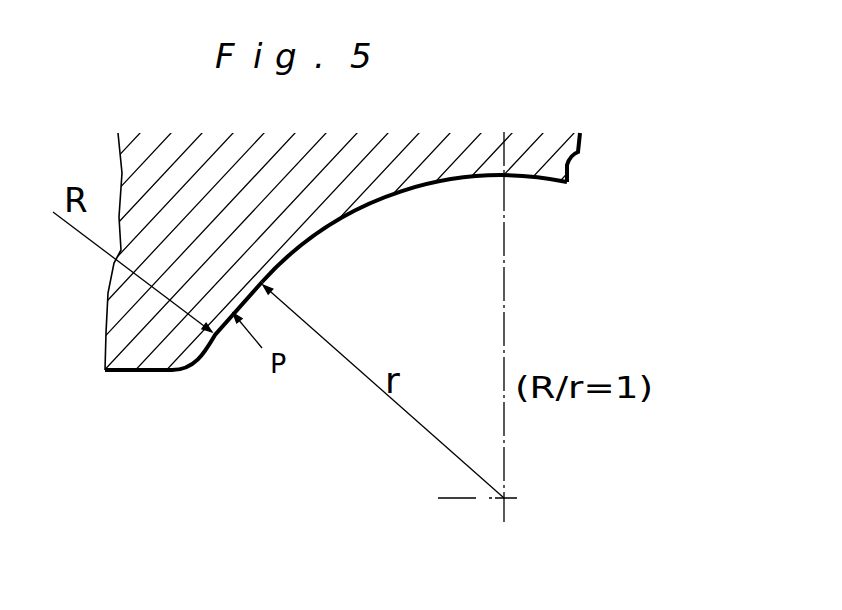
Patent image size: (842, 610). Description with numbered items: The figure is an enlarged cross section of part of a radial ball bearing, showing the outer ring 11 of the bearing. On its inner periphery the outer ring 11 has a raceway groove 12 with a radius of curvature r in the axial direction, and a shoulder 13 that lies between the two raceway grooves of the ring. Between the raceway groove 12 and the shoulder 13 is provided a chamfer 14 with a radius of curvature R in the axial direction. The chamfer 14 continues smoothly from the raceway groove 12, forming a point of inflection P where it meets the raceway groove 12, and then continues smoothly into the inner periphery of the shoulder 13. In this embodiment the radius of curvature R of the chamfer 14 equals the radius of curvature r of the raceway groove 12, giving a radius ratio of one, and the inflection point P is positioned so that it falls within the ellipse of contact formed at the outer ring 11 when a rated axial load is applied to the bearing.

The outer ring 11 is at (575, 190).
The raceway groove 12 is at (378, 200).
The shoulder 13 is at (120, 372).
The chamfer 14 is at (215, 340).